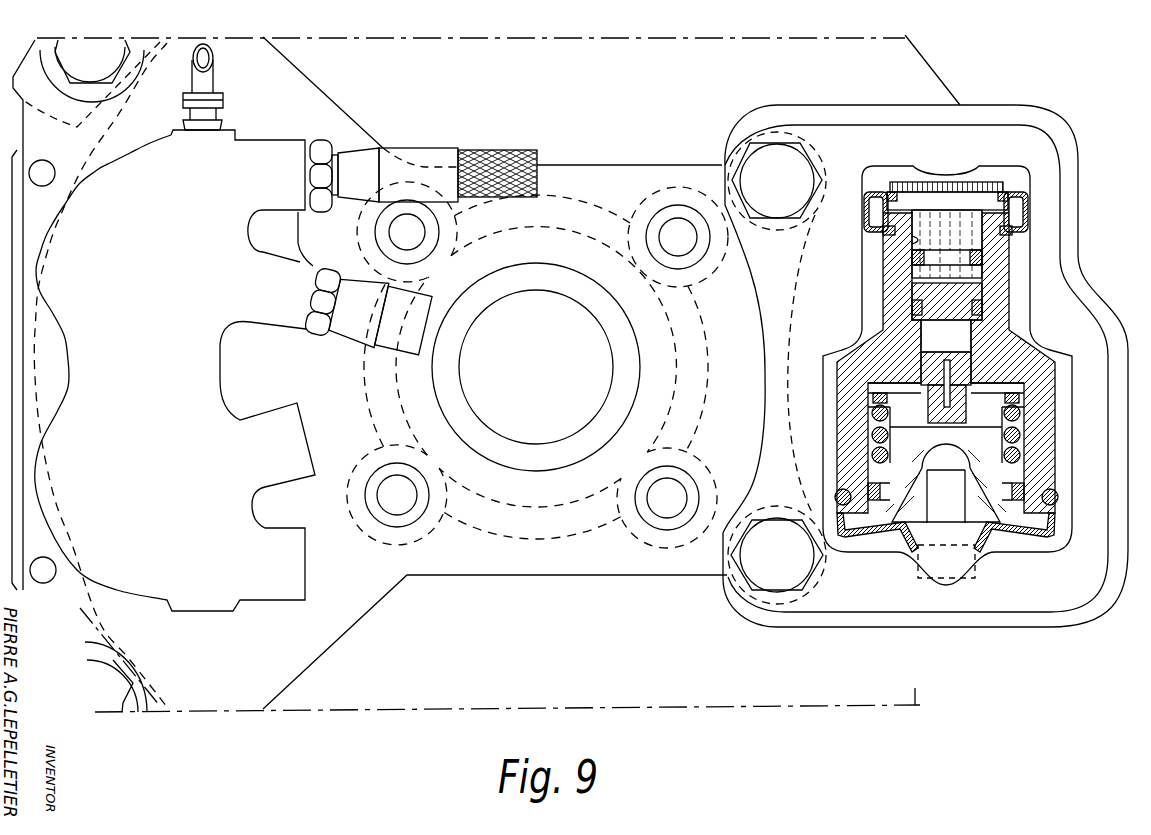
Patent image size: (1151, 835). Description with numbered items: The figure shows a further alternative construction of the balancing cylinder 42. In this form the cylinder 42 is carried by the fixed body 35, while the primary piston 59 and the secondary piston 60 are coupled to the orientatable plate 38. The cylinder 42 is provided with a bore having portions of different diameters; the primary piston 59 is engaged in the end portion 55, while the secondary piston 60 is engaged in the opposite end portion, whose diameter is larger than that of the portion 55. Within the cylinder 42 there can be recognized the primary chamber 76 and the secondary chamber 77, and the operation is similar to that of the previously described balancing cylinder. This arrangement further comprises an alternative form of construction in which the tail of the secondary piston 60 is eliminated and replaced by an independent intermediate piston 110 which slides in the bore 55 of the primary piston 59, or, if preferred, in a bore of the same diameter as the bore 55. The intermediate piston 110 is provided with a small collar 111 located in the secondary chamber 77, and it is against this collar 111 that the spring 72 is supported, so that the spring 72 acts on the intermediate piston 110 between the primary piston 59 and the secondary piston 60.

The fixed body 35 is at (457, 520).
The orientatable plate 38 is at (537, 573).
The balancing cylinder 42 is at (1016, 322).
The bore end portion 55 is at (923, 242).
The primary piston 59 is at (963, 228).
The secondary piston 60 is at (1022, 473).
The spring 72 is at (872, 437).
The primary chamber 76 is at (977, 282).
The secondary chamber 77 is at (993, 400).
The intermediate piston 110 is at (910, 328).
The small collar 111 is at (867, 387).